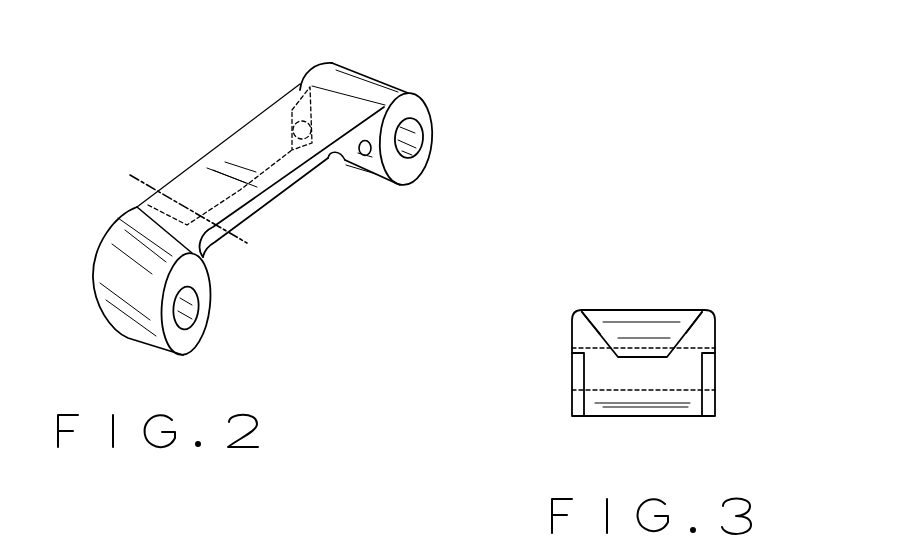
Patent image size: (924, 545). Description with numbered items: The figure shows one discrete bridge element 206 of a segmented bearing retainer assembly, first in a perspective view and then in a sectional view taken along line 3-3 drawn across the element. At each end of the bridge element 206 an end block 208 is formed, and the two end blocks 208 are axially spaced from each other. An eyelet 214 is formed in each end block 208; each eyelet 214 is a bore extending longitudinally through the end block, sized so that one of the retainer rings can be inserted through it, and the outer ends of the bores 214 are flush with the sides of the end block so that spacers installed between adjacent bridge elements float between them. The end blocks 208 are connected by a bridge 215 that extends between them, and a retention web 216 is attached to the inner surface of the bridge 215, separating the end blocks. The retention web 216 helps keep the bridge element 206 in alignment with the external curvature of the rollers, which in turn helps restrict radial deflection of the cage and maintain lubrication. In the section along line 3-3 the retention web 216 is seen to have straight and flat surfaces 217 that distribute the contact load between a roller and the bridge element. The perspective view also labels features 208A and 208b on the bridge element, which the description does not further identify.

In FIG. 2, the bridge element 206 is at (188, 146).
In FIG. 3, the bridge element 206 is at (557, 335).
In FIG. 2, the end block 208 is at (427, 105).
In FIG. 3, the end block 208 is at (572, 403).
In FIG. 2, the hidden pocket 208A is at (300, 110).
In FIG. 2, the small hole 208b is at (368, 163).
In FIG. 2, the eyelet 214 is at (411, 134).
In FIG. 3, the eyelet 214 is at (707, 368).
In FIG. 2, the bridge 215 is at (243, 155).
In FIG. 3, the bridge 215 is at (620, 311).
In FIG. 2, the retention web 216 is at (259, 203).
In FIG. 3, the retention web 216 is at (672, 332).
In FIG. 3, the straight and flat surfaces 217 is at (688, 325).
In FIG. 2, the line 3- 3 is at (130, 175).